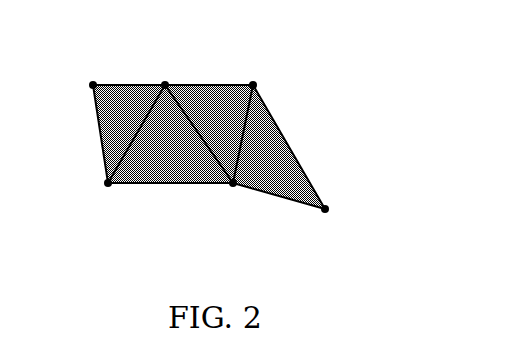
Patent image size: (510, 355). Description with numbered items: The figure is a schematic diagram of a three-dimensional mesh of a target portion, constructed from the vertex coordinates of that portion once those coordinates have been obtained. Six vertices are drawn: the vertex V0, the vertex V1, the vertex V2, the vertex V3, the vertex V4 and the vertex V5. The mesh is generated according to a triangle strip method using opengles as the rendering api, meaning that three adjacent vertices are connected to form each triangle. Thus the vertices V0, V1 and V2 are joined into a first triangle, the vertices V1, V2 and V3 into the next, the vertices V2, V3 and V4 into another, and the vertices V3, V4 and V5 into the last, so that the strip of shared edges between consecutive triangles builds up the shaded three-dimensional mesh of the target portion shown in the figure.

The vertex V0 is at (84, 68).
The vertex V1 is at (105, 201).
The vertex V2 is at (162, 68).
The vertex V3 is at (226, 201).
The vertex V4 is at (254, 68).
The vertex V5 is at (342, 217).